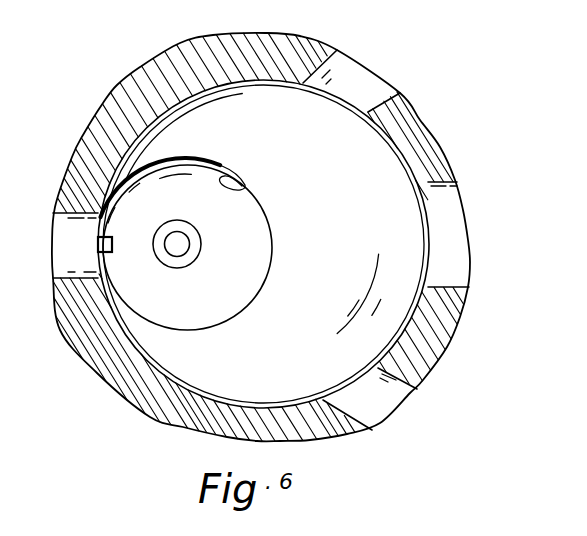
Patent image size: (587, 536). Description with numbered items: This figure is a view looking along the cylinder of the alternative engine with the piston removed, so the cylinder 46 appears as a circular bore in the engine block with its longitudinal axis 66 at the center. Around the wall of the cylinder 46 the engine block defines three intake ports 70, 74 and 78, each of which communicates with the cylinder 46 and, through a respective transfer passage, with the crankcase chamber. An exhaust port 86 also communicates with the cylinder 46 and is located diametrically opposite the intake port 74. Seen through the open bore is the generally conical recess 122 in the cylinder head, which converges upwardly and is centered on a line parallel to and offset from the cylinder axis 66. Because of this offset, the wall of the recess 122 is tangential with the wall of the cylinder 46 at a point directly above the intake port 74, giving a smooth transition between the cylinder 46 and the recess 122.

The cylinder 46 is at (227, 87).
The intake port 78 is at (334, 57).
The exhaust port 86 is at (429, 194).
The intake port 74 is at (67, 281).
The intake port 70 is at (402, 380).
The longitudinal axis 66 is at (270, 238).
The recess 122 is at (245, 185).